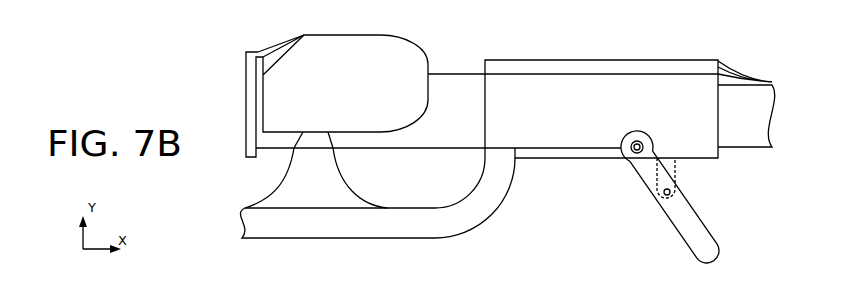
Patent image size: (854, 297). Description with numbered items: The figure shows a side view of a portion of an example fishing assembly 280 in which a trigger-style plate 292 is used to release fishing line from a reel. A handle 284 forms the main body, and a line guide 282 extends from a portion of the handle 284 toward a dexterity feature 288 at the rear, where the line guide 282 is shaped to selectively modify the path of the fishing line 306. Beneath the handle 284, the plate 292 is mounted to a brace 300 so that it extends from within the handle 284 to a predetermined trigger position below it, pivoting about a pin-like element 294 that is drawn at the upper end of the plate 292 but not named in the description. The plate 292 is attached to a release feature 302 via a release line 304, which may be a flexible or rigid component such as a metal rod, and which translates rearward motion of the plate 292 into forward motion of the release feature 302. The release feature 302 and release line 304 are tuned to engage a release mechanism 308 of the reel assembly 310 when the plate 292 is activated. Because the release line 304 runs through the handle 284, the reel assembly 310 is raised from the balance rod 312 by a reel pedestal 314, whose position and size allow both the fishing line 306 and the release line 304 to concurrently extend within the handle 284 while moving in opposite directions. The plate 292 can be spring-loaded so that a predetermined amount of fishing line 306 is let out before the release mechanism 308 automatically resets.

The fishing assembly 280 is at (172, 62).
The line guide 282 is at (724, 70).
The handle 284 is at (616, 120).
The dexterity feature 288 is at (759, 126).
The plate 292 is at (681, 234).
The pivot pin 294 is at (646, 141).
The brace 300 is at (677, 167).
The release feature 302 is at (248, 88).
The release line 304 is at (424, 149).
The fishing line 306 is at (524, 77).
The release mechanism 308 is at (273, 60).
The reel assembly 310 is at (360, 92).
The balance rod 312 is at (371, 233).
The reel pedestal 314 is at (333, 194).